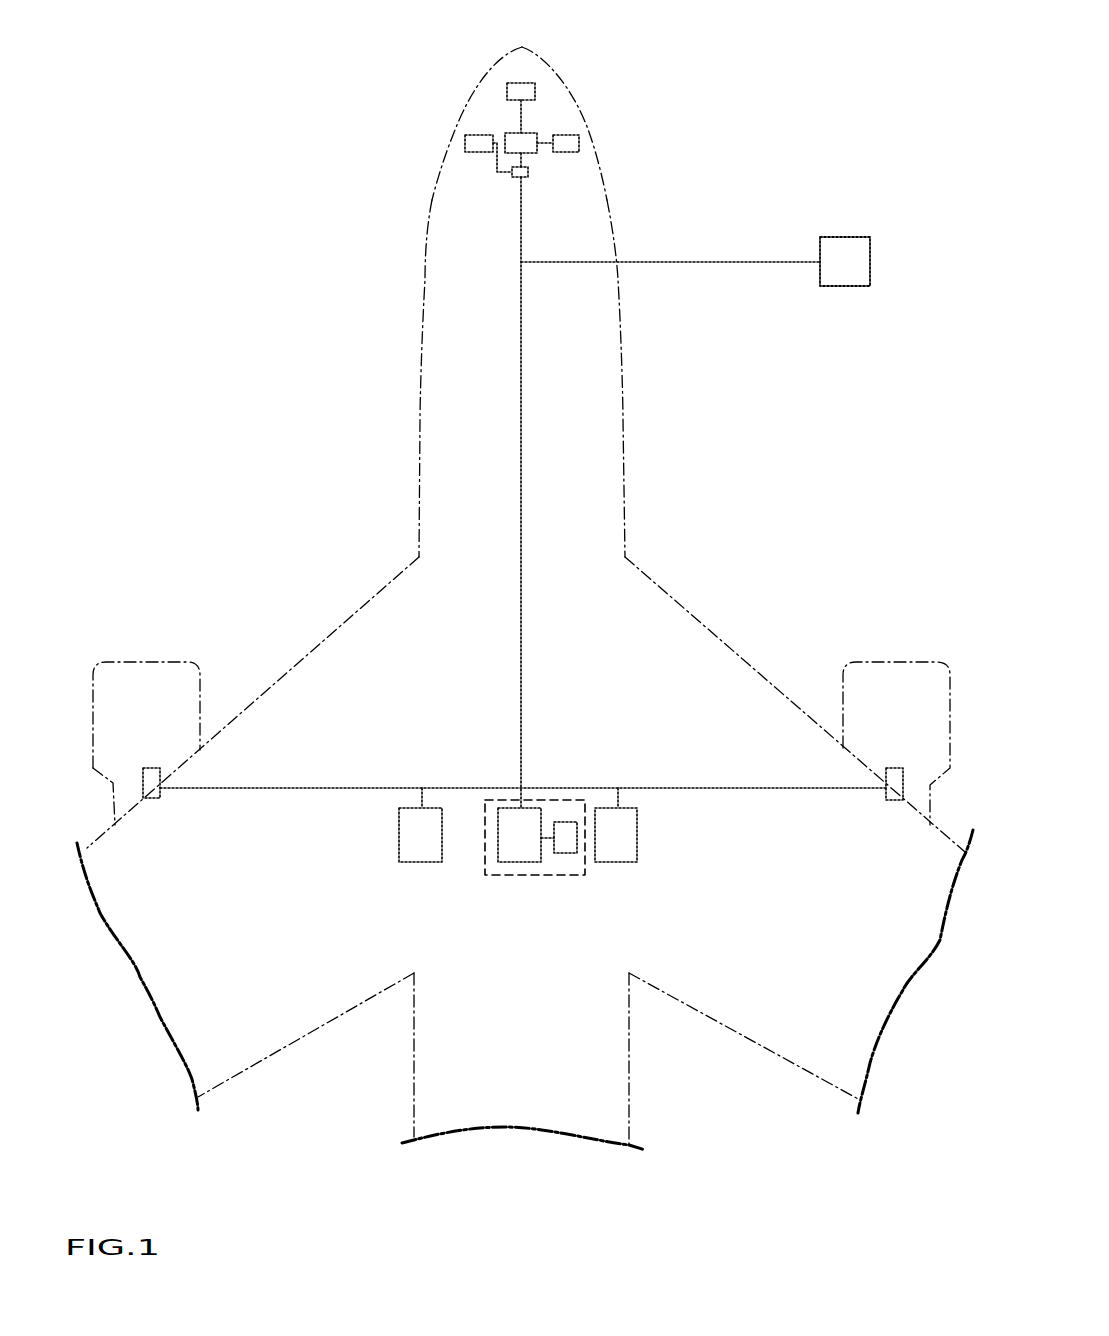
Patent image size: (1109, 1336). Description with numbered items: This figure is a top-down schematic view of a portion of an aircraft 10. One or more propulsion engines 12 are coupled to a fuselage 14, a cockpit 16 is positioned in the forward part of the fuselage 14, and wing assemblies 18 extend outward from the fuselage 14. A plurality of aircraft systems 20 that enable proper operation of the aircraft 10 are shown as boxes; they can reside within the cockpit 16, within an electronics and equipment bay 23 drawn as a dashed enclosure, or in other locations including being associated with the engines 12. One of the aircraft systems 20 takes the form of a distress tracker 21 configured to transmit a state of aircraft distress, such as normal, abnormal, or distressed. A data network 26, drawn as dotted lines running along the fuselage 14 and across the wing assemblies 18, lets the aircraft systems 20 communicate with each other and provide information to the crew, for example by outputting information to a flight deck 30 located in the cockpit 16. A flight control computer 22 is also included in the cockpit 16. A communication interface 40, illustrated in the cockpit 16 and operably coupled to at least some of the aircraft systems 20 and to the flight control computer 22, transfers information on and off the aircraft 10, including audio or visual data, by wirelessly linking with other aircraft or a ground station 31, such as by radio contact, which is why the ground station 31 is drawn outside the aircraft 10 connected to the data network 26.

The aircraft 10 is at (300, 133).
The propulsion engine 12 is at (893, 662).
The fuselage 14 is at (630, 393).
The cockpit 16 is at (480, 80).
The wing assembly 18 is at (760, 667).
The aircraft system 20 is at (573, 143).
The distress tracker 21 is at (470, 145).
The flight control computer 22 is at (526, 83).
The electronics and equipment bay 23 is at (503, 875).
The data network 26 is at (527, 244).
The flight deck 30 is at (525, 133).
The ground station 31 is at (833, 237).
The communication interface 40 is at (528, 172).